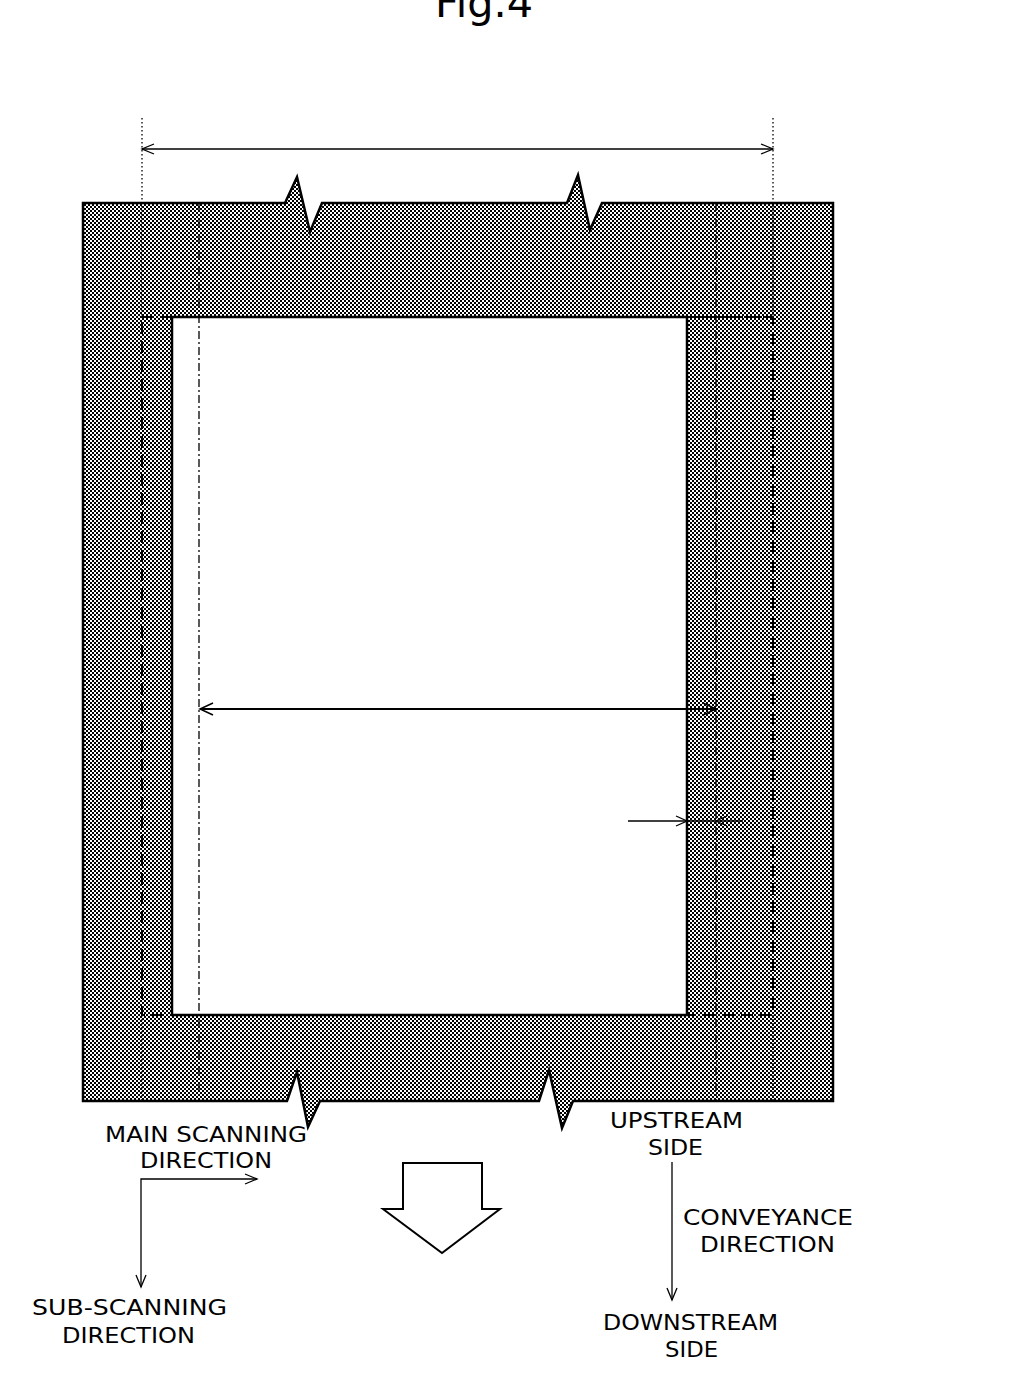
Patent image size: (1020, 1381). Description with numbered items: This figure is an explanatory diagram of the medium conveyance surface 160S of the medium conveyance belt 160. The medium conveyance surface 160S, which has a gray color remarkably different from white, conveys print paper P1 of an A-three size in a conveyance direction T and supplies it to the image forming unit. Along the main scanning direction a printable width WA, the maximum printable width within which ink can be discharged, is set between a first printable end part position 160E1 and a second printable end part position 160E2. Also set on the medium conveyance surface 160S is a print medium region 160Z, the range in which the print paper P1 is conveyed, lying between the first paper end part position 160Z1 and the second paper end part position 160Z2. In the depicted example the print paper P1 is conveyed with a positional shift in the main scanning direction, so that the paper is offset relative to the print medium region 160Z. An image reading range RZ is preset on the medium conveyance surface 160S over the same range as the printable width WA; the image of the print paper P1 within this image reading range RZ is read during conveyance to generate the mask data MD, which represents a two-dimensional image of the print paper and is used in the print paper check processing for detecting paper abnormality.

The medium conveyance belt 160 is at (662, 143).
The medium conveyance surface 160S is at (513, 261).
The first printable end part position 160E1 is at (143, 233).
The second printable end part position 160E2 is at (773, 233).
The first paper end part position 160Z1 is at (199, 222).
The second paper end part position 160Z2 is at (716, 237).
The print medium region 160Z is at (458, 696).
The print paper P1 is at (385, 472).
The image reading range RZ is at (780, 317).
The mask data MD is at (778, 481).
The printable width WA is at (457, 136).
The conveyance direction T is at (408, 1230).